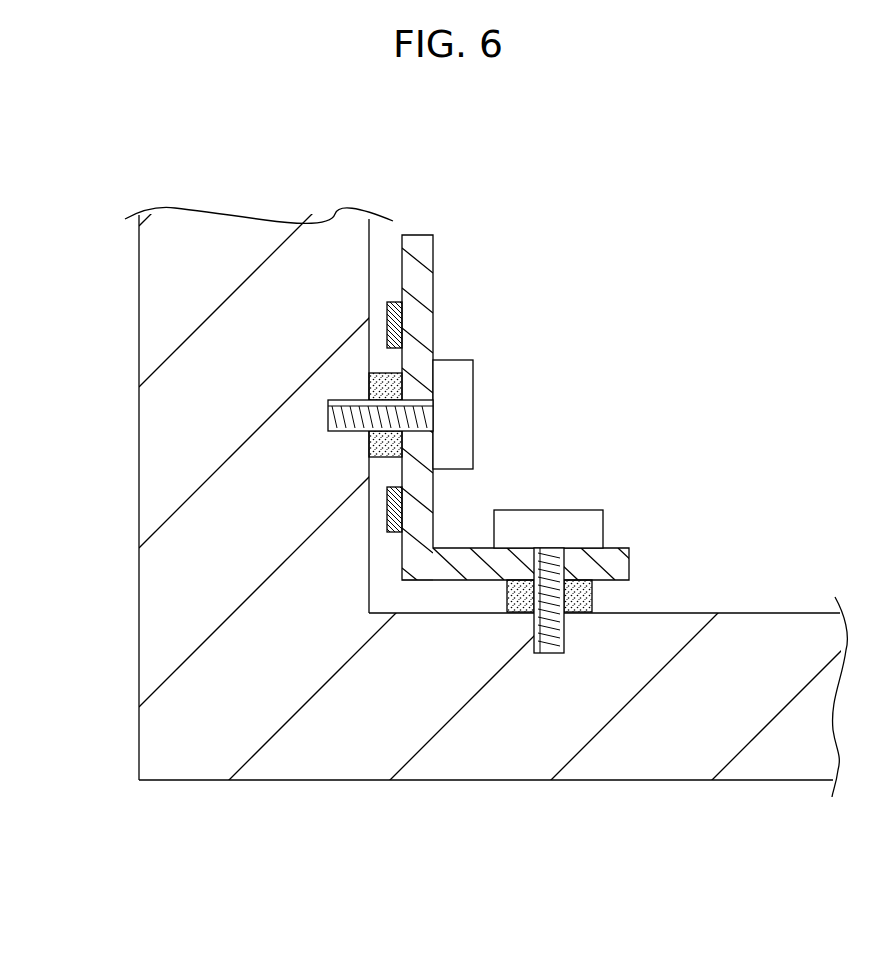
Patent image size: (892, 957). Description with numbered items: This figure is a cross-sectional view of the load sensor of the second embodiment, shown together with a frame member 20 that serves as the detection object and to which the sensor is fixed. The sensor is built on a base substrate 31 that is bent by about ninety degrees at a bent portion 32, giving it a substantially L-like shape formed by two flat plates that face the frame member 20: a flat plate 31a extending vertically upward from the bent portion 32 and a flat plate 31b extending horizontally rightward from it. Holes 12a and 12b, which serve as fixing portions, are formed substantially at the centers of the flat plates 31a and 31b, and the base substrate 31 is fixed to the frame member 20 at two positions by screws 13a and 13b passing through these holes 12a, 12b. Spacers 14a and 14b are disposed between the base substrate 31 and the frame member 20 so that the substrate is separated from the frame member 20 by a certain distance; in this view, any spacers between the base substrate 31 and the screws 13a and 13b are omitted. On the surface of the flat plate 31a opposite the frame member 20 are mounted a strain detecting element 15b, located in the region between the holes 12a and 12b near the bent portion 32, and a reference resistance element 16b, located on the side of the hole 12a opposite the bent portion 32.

The frame member 20 is at (158, 313).
The base substrate 31 is at (527, 418).
The flat plate 31a is at (412, 506).
The flat plate 31b is at (467, 570).
The hole 12a is at (416, 410).
The hole 12b is at (542, 570).
The screw 13a is at (462, 390).
The screw 13b is at (582, 520).
The spacer 14a is at (383, 390).
The spacer 14b is at (523, 602).
The strain detecting element 15b is at (390, 513).
The reference resistance element 16b is at (392, 333).
The bent portion 32 is at (400, 585).